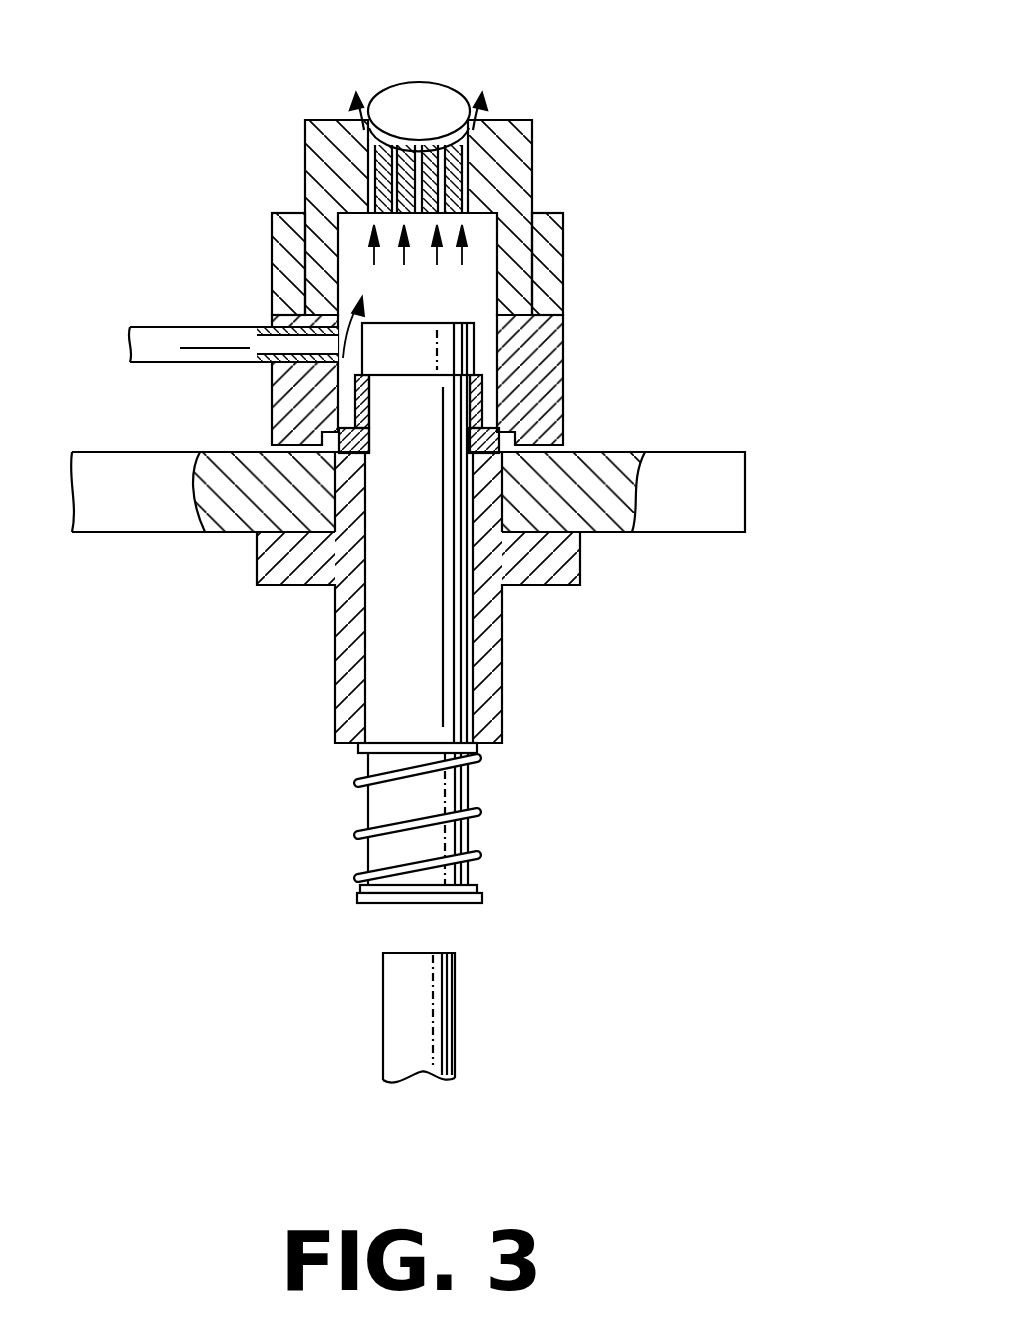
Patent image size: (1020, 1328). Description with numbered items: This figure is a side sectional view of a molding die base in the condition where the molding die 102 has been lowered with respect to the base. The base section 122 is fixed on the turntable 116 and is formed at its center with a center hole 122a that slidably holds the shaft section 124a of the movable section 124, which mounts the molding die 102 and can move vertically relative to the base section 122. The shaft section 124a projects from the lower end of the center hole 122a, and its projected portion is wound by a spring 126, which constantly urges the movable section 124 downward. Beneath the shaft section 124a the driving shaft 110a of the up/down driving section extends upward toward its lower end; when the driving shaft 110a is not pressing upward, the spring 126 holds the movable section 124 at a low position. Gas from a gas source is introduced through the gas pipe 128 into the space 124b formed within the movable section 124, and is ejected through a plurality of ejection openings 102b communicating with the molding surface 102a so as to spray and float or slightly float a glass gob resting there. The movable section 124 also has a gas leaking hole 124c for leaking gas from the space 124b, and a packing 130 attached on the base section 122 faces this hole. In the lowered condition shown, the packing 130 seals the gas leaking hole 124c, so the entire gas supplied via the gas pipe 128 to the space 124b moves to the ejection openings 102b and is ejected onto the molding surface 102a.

The molding die 102 is at (305, 155).
The molding surface 102a is at (424, 150).
The ejection openings 102b is at (470, 166).
The movable section 124 is at (563, 307).
The shaft section 124a is at (443, 613).
The space 124b is at (483, 270).
The gas leaking hole 124c is at (487, 402).
The gas pipe 128 is at (177, 333).
The packing 130 is at (563, 417).
The turntable 116 is at (728, 491).
The base section 122 is at (490, 688).
The center hole 122a is at (363, 630).
The spring 126 is at (478, 857).
The driving shaft 110a is at (440, 1008).